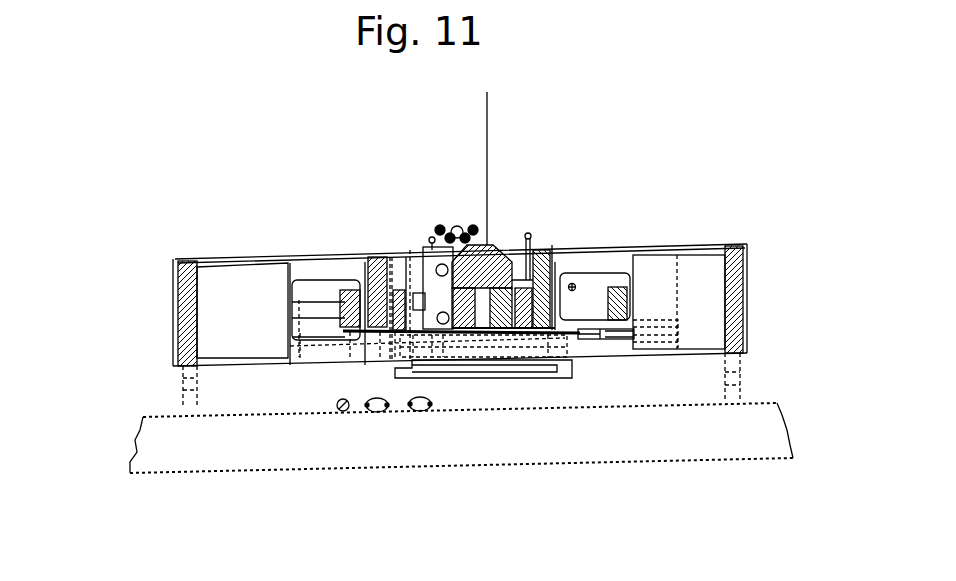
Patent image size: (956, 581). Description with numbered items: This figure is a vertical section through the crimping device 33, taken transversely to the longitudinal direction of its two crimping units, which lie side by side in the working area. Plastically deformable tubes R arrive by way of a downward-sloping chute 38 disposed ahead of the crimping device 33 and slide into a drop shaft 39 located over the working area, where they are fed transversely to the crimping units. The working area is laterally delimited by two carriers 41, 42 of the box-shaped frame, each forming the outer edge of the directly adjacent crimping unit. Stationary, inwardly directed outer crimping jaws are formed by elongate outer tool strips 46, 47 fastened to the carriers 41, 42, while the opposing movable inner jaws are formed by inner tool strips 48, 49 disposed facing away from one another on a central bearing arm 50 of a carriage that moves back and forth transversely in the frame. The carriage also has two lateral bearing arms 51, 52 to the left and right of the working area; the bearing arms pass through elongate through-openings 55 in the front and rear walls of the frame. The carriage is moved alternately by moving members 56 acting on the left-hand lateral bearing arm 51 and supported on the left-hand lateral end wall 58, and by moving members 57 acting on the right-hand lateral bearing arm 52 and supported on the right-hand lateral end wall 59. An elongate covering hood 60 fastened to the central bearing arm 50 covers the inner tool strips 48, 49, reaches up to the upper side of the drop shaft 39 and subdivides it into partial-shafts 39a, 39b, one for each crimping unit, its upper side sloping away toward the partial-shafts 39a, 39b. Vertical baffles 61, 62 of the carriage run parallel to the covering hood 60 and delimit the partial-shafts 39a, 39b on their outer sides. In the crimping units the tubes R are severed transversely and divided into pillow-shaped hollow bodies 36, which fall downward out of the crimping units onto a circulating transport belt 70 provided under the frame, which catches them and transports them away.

The crimping device 33 is at (680, 223).
The pillow-shaped hollow bodies 36 is at (377, 413).
The chute 38 is at (440, 228).
The drop shaft 39 is at (509, 236).
The partial-shaft 39a is at (437, 292).
The partial-shaft 39b is at (524, 236).
The carrier 41 is at (388, 290).
The carrier 42 is at (544, 255).
The outer tool strip 46 is at (390, 335).
The outer tool strip 47 is at (535, 345).
The inner tool strip 48 is at (454, 338).
The inner tool strip 49 is at (500, 338).
The central bearing arm 50 is at (478, 340).
The lateral bearing arm 51 is at (343, 292).
The lateral bearing arm 52 is at (615, 288).
The through-openings 55 is at (311, 283).
The moving members 56 is at (222, 272).
The moving members 57 is at (700, 319).
The left-hand lateral end wall 58 is at (175, 343).
The right-hand lateral end wall 59 is at (738, 282).
The covering hood 60 is at (487, 154).
The baffle 61 is at (430, 241).
The baffle 62 is at (530, 235).
The circulating transport belt 70 is at (700, 408).
The tubes R is at (457, 226).